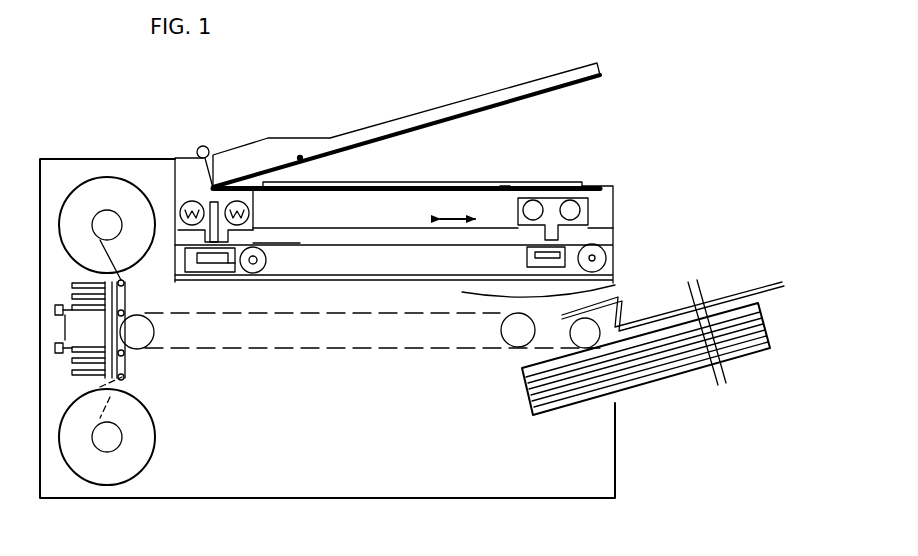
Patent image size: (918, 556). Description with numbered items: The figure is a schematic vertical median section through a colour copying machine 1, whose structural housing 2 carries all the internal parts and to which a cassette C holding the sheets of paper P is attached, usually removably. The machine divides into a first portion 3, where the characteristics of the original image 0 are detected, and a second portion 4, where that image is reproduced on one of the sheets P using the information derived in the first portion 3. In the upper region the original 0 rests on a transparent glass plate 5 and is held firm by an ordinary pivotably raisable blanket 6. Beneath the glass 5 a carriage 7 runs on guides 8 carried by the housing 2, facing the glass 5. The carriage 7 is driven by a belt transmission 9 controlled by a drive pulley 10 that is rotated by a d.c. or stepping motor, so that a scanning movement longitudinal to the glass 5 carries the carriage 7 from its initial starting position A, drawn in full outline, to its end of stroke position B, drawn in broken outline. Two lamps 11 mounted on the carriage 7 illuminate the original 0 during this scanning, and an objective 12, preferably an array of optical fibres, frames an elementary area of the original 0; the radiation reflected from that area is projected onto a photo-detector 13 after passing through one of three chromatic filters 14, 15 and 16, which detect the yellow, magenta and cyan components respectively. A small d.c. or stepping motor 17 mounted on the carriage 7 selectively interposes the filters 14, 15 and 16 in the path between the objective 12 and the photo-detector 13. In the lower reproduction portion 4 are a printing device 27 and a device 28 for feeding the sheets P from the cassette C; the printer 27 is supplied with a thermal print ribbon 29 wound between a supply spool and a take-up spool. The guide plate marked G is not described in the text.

The copying machine 1 is at (645, 228).
The structural housing 2 is at (604, 500).
The first portion 3 is at (166, 194).
The second portion 4 is at (395, 366).
The transparent glass plate 5 is at (382, 189).
The pivotably raisable blanket 6 is at (505, 97).
The carriage 7 is at (285, 198).
The guides 8 is at (388, 240).
The belt transmission 9 is at (428, 290).
The drive pulley 10 is at (594, 258).
The lamps 11 is at (240, 200).
The objective 12 is at (207, 237).
The photo-detector 13 is at (218, 268).
The chromatic filter 14 is at (182, 262).
The chromatic filter 15 is at (232, 266).
The chromatic filter 16 is at (265, 243).
The small d.c. or stepping motor 17 is at (268, 262).
The printing device 27 is at (72, 382).
The sheet feed device 28 is at (200, 362).
The thermal print ribbon 29 is at (92, 246).
The initial starting position A is at (189, 184).
The end of stroke position B is at (555, 178).
The cassette C is at (647, 385).
The guide plate G is at (757, 283).
The sheets of paper P is at (745, 337).
The original image 0 is at (505, 185).